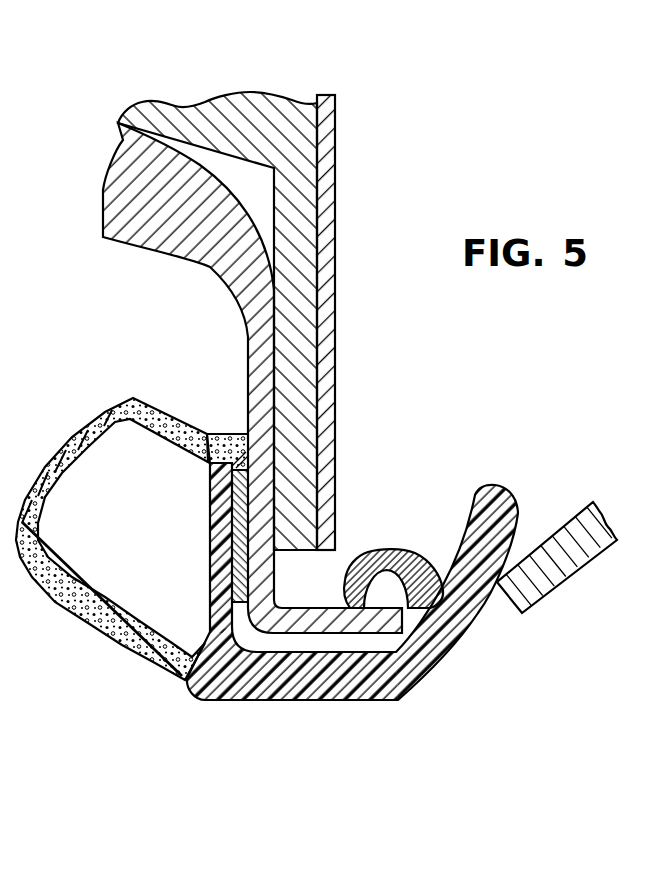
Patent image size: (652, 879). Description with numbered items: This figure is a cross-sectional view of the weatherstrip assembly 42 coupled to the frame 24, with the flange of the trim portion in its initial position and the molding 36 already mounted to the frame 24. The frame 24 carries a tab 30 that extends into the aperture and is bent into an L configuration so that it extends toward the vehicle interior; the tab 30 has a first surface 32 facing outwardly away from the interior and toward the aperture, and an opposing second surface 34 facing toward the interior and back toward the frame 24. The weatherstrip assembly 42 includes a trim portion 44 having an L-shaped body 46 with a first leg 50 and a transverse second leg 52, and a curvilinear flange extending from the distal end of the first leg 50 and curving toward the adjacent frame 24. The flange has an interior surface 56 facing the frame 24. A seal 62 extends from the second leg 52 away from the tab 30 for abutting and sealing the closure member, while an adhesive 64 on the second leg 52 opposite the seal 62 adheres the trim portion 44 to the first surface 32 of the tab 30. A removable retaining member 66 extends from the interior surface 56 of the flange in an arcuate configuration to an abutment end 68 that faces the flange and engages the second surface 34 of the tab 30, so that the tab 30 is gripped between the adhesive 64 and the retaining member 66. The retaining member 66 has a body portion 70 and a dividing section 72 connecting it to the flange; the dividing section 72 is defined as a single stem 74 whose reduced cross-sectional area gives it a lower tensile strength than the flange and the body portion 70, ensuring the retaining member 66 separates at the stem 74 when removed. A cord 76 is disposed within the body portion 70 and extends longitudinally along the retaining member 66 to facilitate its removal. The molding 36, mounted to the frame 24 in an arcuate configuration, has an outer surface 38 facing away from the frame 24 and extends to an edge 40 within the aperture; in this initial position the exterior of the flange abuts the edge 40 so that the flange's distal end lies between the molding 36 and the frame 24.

The frame 24 is at (86, 160).
The tab 30 is at (266, 447).
The first surface 32 is at (222, 435).
The second surface 34 is at (274, 577).
The molding 36 is at (572, 542).
The outer surface 38 is at (558, 597).
The edge 40 is at (505, 607).
The weatherstrip assembly 42 is at (279, 604).
The trim portion 44 is at (304, 601).
The body 46 is at (210, 540).
The first leg 50 is at (319, 672).
The second leg 52 is at (213, 497).
The interior surface 56 is at (468, 535).
The seal 62 is at (100, 603).
The adhesive 64 is at (222, 582).
The retaining member 66 is at (440, 553).
The abutment end 68 is at (355, 600).
The body portion 70 is at (413, 556).
The dividing section 72 is at (447, 582).
The stem 74 is at (438, 620).
The cord 76 is at (392, 548).